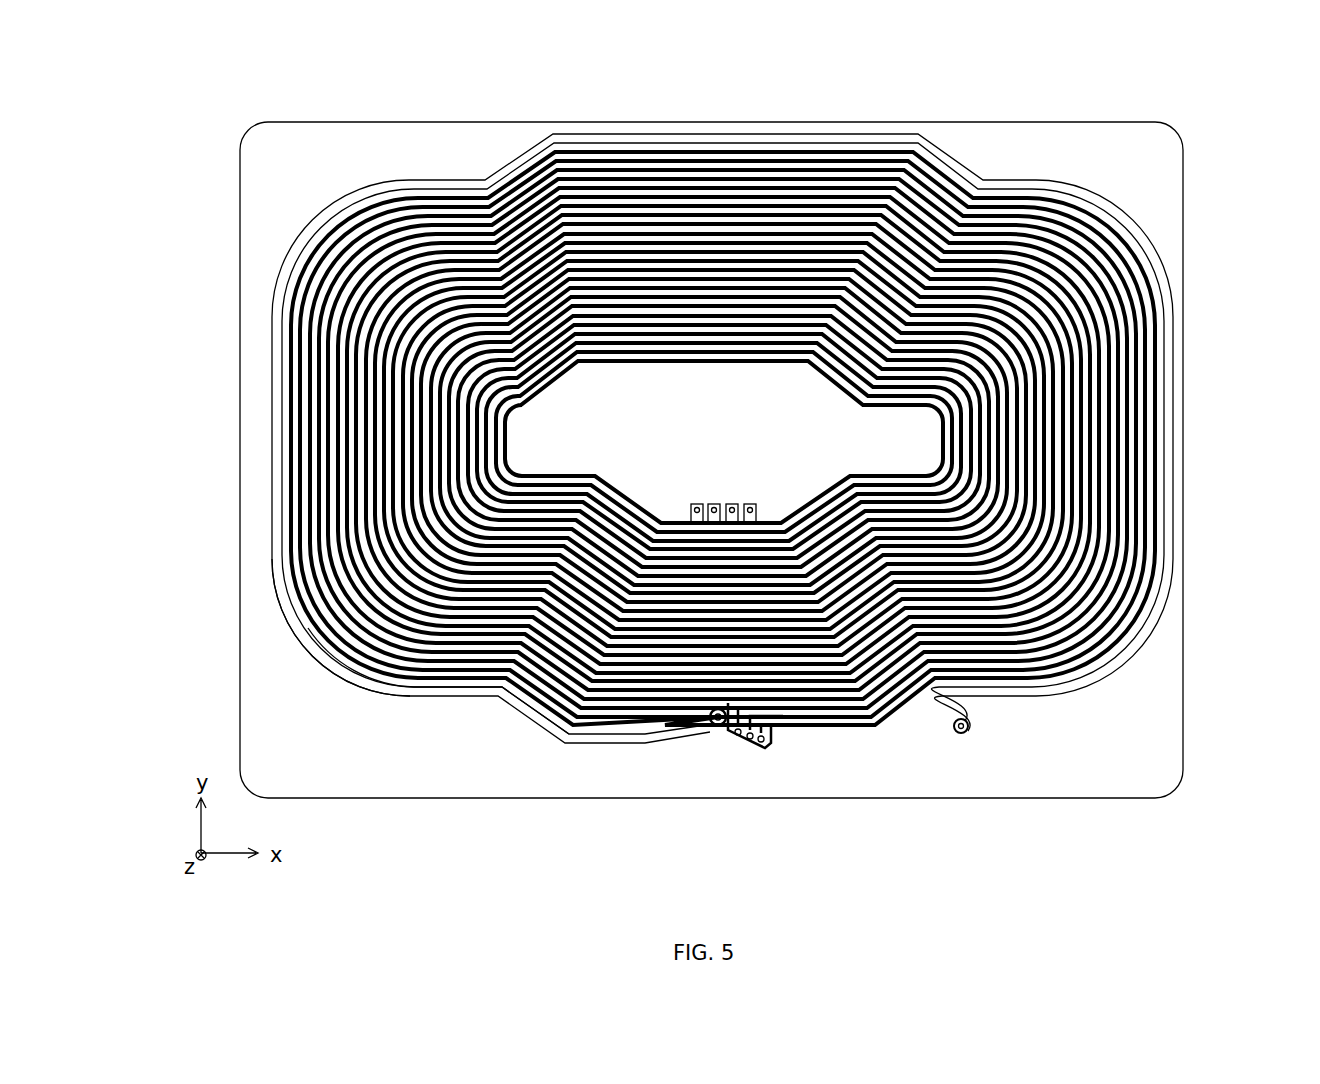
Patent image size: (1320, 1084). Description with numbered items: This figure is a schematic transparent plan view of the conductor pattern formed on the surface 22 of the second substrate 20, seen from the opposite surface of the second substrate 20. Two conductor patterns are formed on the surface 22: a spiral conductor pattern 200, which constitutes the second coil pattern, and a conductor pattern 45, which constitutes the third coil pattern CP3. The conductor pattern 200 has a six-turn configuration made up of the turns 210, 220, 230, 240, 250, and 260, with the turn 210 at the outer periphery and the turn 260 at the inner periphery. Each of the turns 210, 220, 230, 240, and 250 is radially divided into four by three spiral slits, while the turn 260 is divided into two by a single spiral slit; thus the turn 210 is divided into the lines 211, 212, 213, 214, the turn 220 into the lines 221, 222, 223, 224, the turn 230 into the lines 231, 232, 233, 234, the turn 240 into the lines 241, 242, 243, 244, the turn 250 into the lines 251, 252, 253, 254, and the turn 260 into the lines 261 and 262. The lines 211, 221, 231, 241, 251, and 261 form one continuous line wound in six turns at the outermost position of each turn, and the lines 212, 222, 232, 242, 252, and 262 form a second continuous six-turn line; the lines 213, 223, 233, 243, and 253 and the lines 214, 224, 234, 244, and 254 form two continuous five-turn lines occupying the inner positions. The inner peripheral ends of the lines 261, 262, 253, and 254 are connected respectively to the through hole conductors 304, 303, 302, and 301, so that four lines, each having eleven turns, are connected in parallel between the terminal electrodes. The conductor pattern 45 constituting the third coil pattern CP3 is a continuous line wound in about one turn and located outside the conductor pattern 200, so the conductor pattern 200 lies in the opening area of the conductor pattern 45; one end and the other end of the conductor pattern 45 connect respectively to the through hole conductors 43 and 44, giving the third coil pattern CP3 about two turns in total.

The second substrate 20 is at (1180, 162).
The surface of the second substrate 22 is at (1084, 142).
The through hole conductor 43 is at (710, 718).
The through hole conductor 44 is at (958, 723).
The conductor pattern 45 is at (430, 702).
The conductor pattern 200 is at (706, 502).
The turn 210 is at (811, 439).
The line 211 is at (1130, 330).
The line 212 is at (1121, 347).
The line 213 is at (1111, 363).
The line 214 is at (1101, 380).
The turn 220 is at (829, 439).
The line 221 is at (1086, 470).
The line 222 is at (1077, 490).
The line 223 is at (1068, 505).
The line 224 is at (1059, 525).
The turn 230 is at (581, 459).
The line 231 is at (392, 580).
The line 232 is at (401, 568).
The line 233 is at (410, 555).
The line 234 is at (420, 540).
The turn 240 is at (563, 440).
The line 241 is at (415, 512).
The line 242 is at (425, 489).
The line 243 is at (434, 463).
The line 244 is at (443, 436).
The turn 250 is at (544, 430).
The line 251 is at (448, 410).
The line 252 is at (455, 402).
The line 253 is at (462, 394).
The line 254 is at (470, 384).
The turn 260 is at (724, 442).
The line 261 is at (670, 344).
The line 262 is at (653, 353).
The through hole conductor 301 is at (724, 498).
The through hole conductor 302 is at (745, 500).
The through hole conductor 303 is at (687, 500).
The through hole conductor 304 is at (705, 498).
The third coil pattern CP3 is at (322, 688).